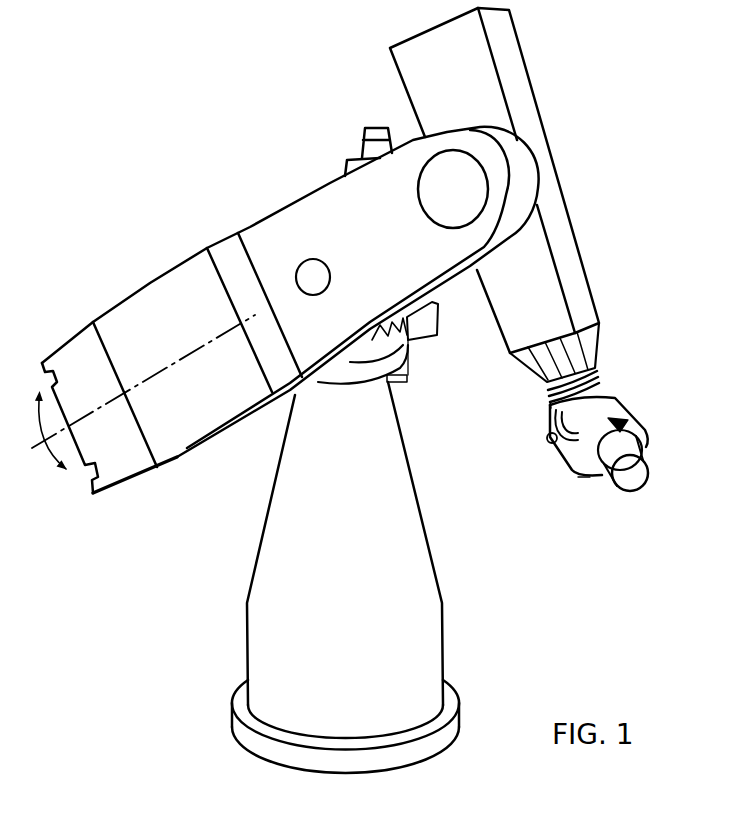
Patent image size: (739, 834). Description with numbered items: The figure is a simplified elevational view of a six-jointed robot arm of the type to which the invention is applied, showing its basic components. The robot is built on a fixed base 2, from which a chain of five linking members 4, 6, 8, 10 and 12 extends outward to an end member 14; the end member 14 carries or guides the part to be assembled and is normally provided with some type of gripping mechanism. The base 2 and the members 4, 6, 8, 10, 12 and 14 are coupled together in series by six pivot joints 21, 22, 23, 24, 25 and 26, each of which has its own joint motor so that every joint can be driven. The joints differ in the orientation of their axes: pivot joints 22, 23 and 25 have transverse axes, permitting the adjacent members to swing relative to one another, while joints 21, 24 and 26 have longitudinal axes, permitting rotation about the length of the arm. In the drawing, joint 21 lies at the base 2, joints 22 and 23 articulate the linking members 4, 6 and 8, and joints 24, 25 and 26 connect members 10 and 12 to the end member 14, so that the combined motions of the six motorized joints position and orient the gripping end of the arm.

The fixed base 2 is at (427, 543).
The linking member 4 is at (407, 352).
The linking member 6 is at (283, 218).
The linking member 8 is at (582, 260).
The linking member 10 is at (595, 398).
The linking member 12 is at (646, 448).
The end member 14 is at (633, 481).
The pivot joint 21 is at (406, 389).
The pivot joint 22 is at (314, 292).
The pivot joint 23 is at (444, 223).
The pivot joint 24 is at (537, 395).
The pivot joint 25 is at (547, 439).
The pivot joint 26 is at (575, 480).